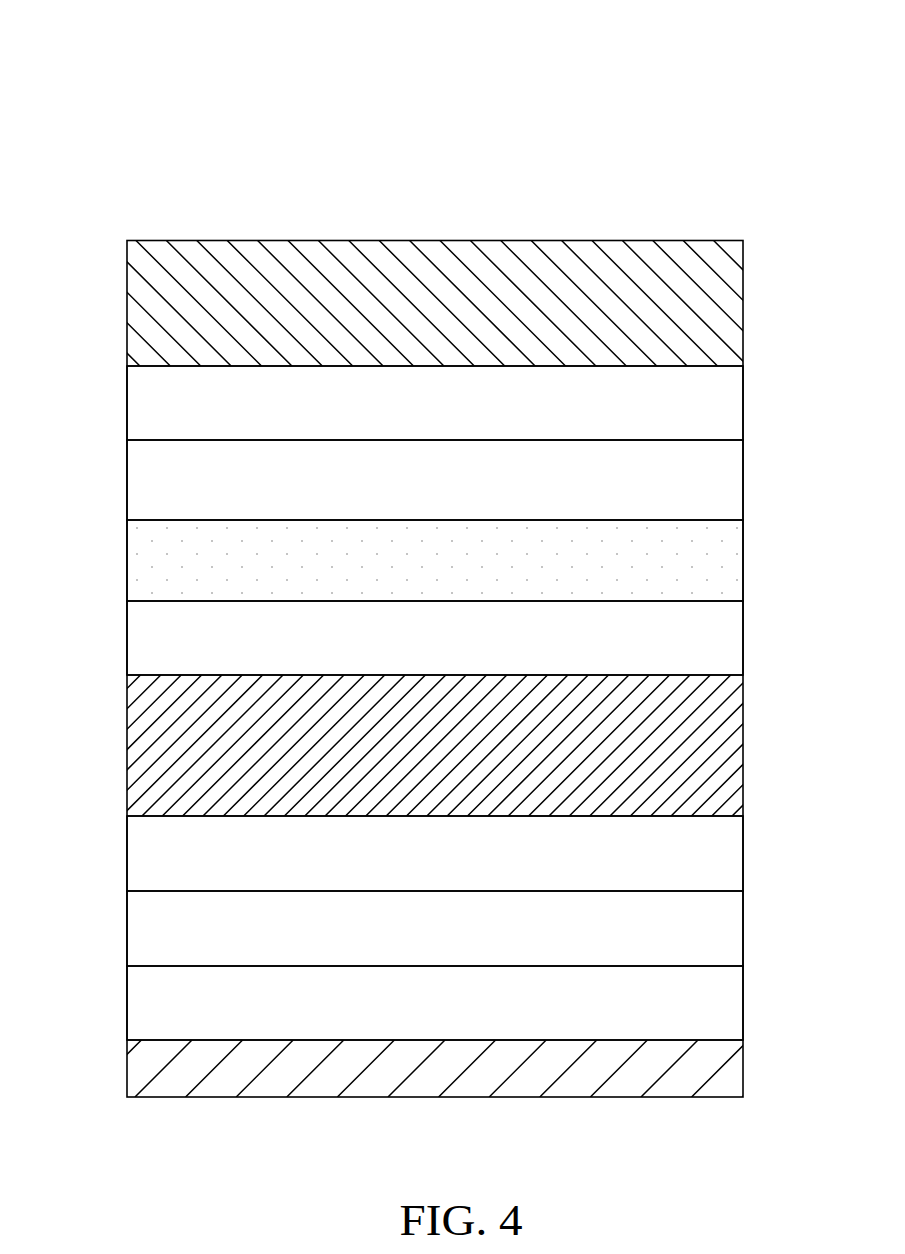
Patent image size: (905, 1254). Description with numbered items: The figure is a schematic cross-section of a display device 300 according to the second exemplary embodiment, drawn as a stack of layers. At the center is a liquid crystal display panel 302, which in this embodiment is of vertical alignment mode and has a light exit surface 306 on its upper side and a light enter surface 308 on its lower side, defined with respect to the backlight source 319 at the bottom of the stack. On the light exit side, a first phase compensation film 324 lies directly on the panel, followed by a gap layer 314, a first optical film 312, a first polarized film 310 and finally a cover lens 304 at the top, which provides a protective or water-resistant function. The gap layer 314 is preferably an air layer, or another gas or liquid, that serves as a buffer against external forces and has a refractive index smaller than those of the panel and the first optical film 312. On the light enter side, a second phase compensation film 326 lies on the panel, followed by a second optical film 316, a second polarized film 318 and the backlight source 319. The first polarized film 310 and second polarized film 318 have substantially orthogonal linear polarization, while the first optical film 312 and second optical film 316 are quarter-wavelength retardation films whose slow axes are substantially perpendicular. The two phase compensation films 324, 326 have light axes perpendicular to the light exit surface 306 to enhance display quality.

The display device 300 is at (763, 84).
The liquid crystal display panel 302 is at (738, 744).
The cover lens 304 is at (737, 302).
The light exit surface 306 is at (157, 674).
The light enter surface 308 is at (157, 817).
The first polarized film 310 is at (738, 404).
The first optical film 312 is at (738, 488).
The gap layer 314 is at (727, 560).
The second optical film 316 is at (738, 931).
The second polarized film 318 is at (738, 1001).
The backlight source 319 is at (738, 1067).
The first phase compensation film 324 is at (738, 651).
The second phase compensation film 326 is at (738, 858).